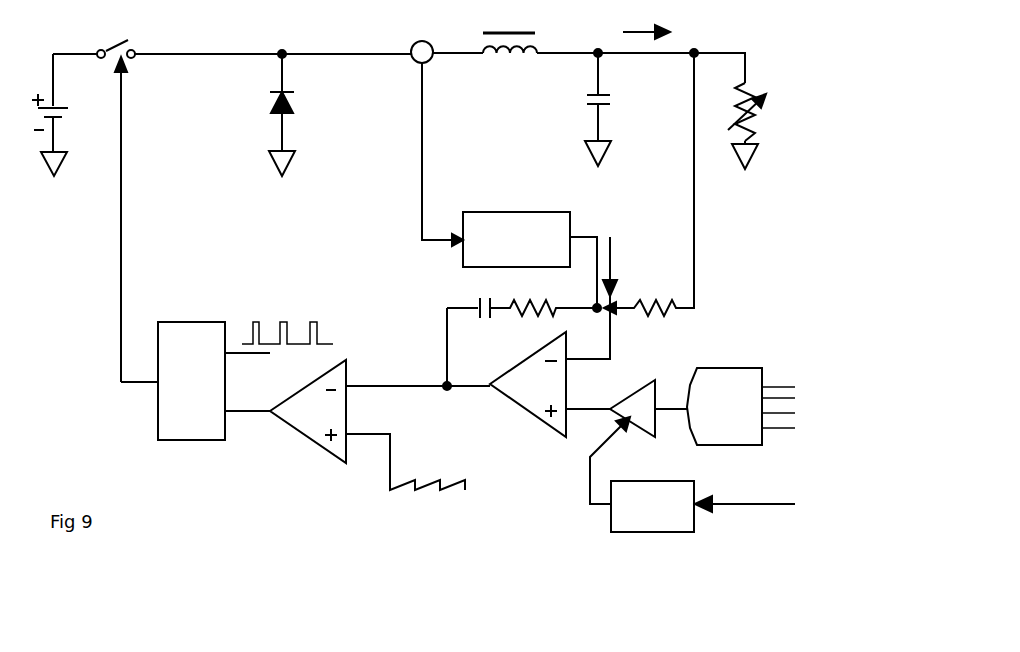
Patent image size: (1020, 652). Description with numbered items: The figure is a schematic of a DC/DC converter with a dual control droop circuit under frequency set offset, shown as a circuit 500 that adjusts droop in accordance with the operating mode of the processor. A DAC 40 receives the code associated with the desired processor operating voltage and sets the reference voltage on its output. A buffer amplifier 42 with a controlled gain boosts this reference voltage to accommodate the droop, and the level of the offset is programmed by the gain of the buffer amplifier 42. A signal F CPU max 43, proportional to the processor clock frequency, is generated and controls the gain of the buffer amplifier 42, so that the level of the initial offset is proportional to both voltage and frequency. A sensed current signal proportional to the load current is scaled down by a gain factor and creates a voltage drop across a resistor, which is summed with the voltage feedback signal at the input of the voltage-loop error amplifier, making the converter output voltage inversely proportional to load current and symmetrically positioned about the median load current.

The circuit 500 is at (406, 267).
The DAC 40 is at (775, 362).
The buffer amplifier 42 is at (668, 378).
The signal F CPU max 43 is at (645, 543).